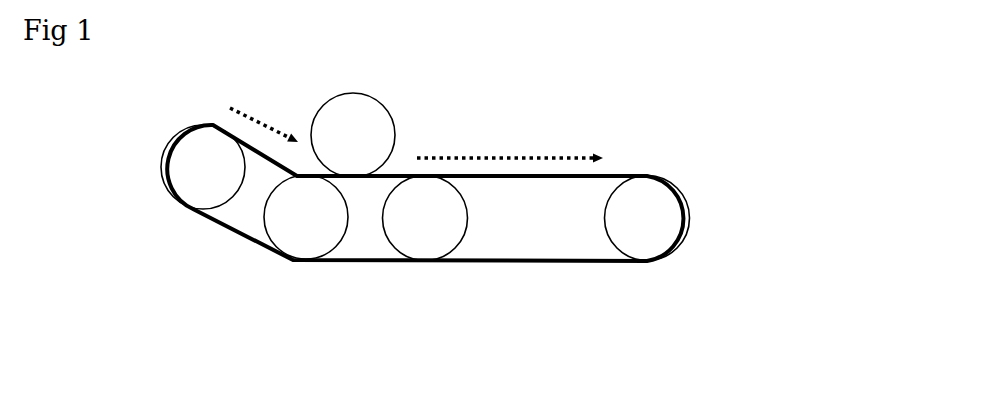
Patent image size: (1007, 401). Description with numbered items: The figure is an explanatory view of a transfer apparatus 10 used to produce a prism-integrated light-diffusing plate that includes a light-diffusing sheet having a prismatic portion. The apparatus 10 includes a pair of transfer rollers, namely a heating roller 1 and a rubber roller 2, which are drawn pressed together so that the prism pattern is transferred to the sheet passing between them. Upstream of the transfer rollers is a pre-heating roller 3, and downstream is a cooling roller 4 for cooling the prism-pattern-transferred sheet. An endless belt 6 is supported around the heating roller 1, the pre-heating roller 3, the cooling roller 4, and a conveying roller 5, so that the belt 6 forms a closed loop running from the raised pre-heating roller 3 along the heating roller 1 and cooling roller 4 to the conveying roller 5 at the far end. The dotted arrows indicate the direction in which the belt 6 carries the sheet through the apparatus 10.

The heating roller 1 is at (302, 243).
The rubber roller 2 is at (373, 112).
The pre-heating roller 3 is at (185, 190).
The cooling roller 4 is at (435, 252).
The conveying roller 5 is at (674, 209).
The endless belt 6 is at (674, 272).
The transfer apparatus 10 is at (619, 93).